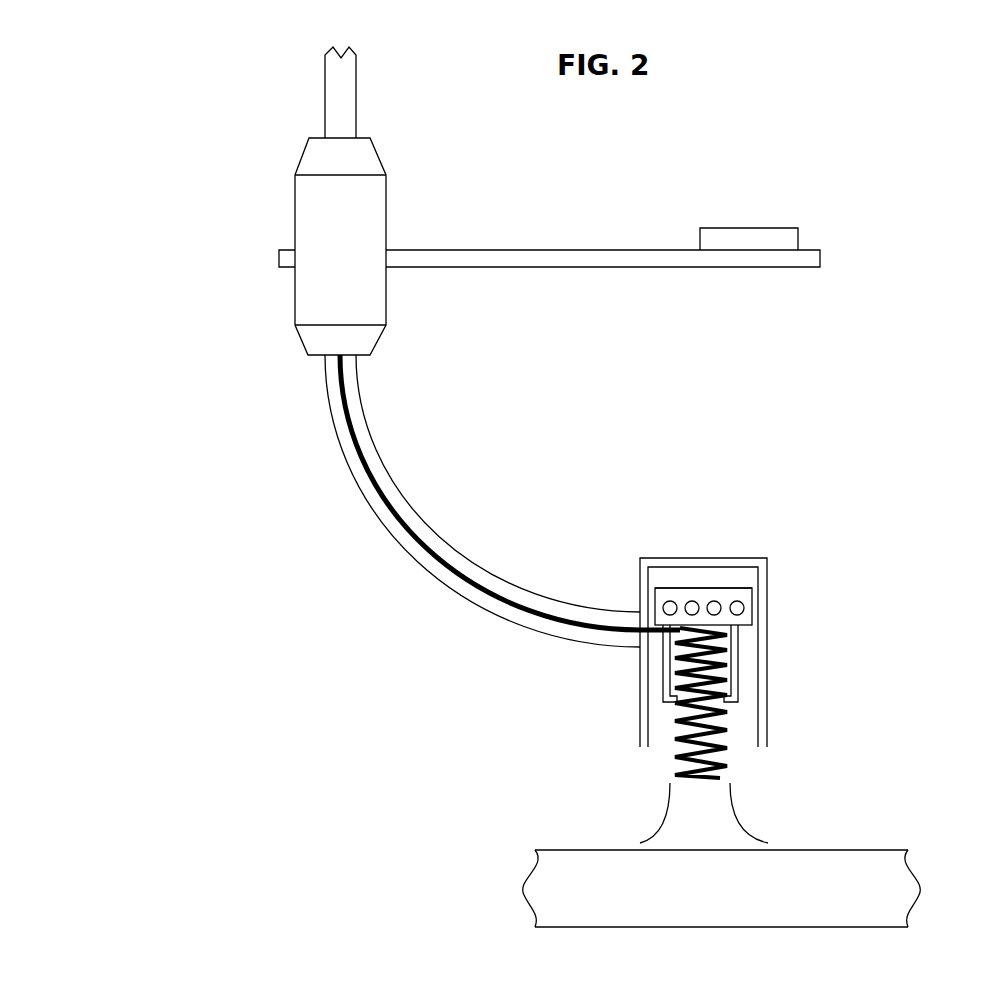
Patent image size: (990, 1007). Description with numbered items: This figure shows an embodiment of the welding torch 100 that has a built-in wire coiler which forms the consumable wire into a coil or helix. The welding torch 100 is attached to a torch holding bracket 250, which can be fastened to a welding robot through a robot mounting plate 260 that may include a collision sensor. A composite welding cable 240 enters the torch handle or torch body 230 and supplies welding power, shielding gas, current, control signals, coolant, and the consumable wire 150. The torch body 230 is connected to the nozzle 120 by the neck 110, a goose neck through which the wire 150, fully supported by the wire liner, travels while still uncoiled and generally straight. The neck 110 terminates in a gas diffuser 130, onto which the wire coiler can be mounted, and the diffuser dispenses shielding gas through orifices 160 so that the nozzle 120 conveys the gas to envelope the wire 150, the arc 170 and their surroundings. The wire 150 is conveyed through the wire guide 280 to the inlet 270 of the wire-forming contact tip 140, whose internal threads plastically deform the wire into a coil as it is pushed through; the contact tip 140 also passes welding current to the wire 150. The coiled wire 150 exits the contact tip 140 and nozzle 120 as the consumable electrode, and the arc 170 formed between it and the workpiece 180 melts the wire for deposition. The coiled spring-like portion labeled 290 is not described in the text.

The welding torch 100 is at (186, 530).
The neck 110 is at (377, 523).
The nozzle 120 is at (642, 700).
The gas diffuser 130 is at (715, 587).
The contact tip 140 is at (737, 663).
The wire 150 is at (392, 508).
The orifices 160 is at (692, 597).
The arc 170 is at (735, 820).
The workpiece 180 is at (820, 850).
The torch body 230 is at (293, 212).
The composite welding cable 240 is at (322, 92).
The torch holding bracket 250 is at (625, 267).
The robot mounting plate 260 is at (736, 228).
The inlet 270 is at (664, 595).
The wire guide 280 is at (650, 600).
The coil spring 290 is at (720, 682).